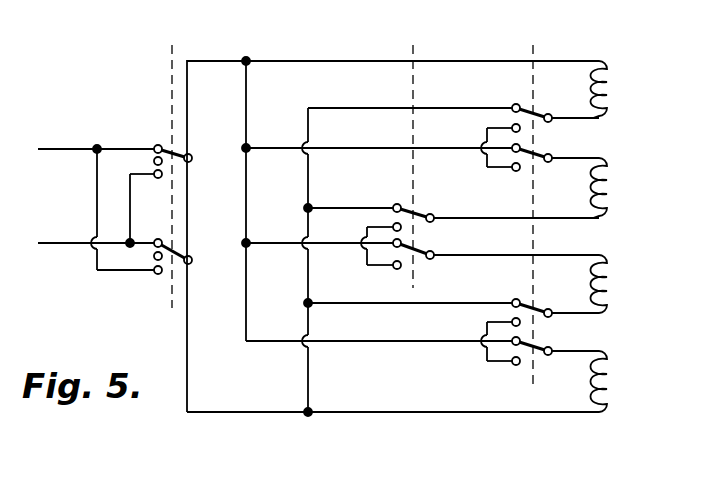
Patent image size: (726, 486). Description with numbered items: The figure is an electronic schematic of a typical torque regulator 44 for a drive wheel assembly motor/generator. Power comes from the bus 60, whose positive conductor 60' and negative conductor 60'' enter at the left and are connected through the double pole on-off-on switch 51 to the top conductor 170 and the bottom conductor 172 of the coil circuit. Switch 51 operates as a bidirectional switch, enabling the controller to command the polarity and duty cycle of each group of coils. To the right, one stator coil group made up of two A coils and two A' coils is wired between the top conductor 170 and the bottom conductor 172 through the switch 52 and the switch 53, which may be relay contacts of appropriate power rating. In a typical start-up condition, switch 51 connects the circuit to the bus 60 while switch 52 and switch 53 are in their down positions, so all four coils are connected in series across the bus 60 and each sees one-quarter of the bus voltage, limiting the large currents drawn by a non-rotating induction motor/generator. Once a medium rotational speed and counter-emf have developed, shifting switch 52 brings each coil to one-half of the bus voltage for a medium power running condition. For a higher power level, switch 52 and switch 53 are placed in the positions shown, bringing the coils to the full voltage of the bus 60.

The torque regulator 44 is at (662, 239).
The double pole on-off-on switch 51 is at (141, 164).
The switch 52 is at (480, 154).
The switch 53 is at (540, 205).
The bus 60 is at (98, 196).
The positive conductor 60' is at (67, 122).
The negative conductor 60'' is at (67, 271).
The top conductor 170 is at (203, 61).
The bottom conductor 172 is at (230, 412).